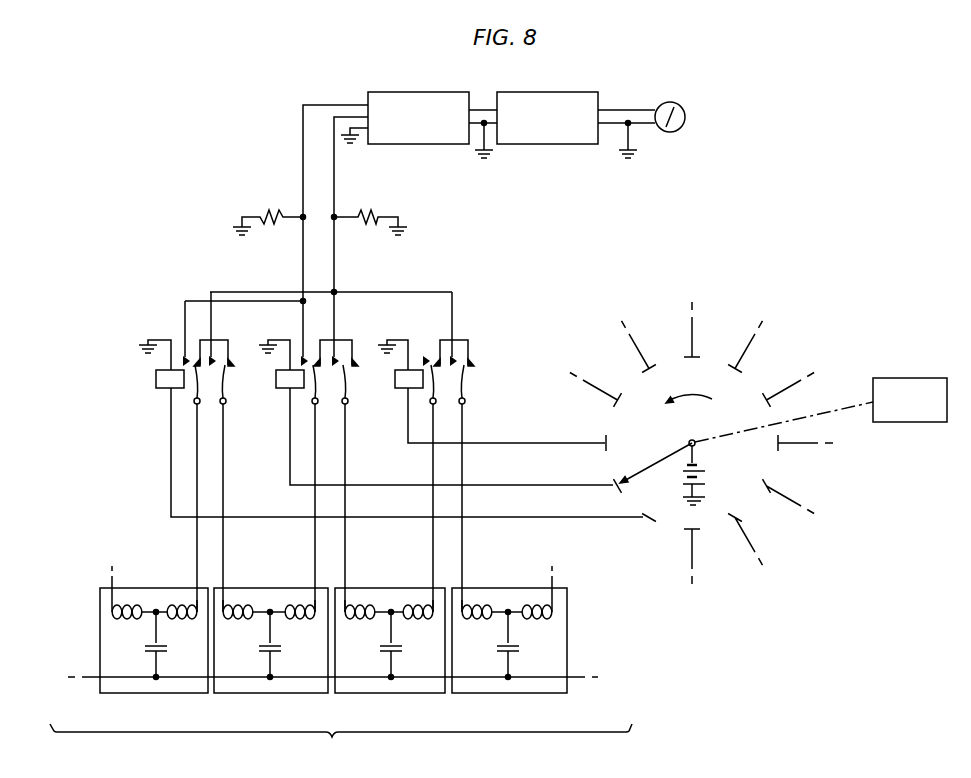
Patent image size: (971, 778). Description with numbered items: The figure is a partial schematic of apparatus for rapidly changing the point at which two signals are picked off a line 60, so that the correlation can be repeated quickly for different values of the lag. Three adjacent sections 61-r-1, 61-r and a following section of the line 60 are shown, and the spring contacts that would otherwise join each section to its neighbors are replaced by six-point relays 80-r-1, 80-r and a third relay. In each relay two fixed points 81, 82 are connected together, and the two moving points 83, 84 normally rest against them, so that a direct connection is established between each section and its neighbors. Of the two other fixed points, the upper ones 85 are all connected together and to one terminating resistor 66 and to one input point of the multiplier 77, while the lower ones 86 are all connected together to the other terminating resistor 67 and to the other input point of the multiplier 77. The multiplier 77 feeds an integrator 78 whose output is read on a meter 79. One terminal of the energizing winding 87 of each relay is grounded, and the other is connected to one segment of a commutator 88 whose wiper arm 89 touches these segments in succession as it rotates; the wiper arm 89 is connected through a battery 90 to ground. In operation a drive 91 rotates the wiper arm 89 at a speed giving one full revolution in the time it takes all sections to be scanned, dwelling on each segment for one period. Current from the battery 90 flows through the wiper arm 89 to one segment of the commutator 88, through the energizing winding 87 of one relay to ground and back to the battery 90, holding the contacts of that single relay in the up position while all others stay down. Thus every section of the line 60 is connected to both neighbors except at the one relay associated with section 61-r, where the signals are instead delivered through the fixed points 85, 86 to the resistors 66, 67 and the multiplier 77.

The multiplier 77 is at (412, 92).
The integrator 78 is at (550, 92).
The indicating meter 79 is at (686, 117).
The terminating resistor 66 is at (267, 210).
The terminating resistor 67 is at (367, 210).
The 6-point relay 80-r-1 is at (170, 323).
The 6-point relay 80-r is at (298, 323).
The upper fixed point 85 is at (187, 357).
The lower fixed point 86 is at (214, 357).
The energizing winding 87 is at (156, 380).
The moving point 83 is at (195, 386).
The fixed point 81 is at (197, 392).
The fixed point 82 is at (226, 372).
The moving point 84 is at (223, 393).
The commutator 88 is at (748, 418).
The wiper arm 89 is at (667, 457).
The battery 90 is at (705, 478).
The drive 91 is at (913, 422).
The section of the line 61-r-1 is at (152, 588).
The section of the line 61-r is at (270, 588).
The line 60 is at (341, 742).